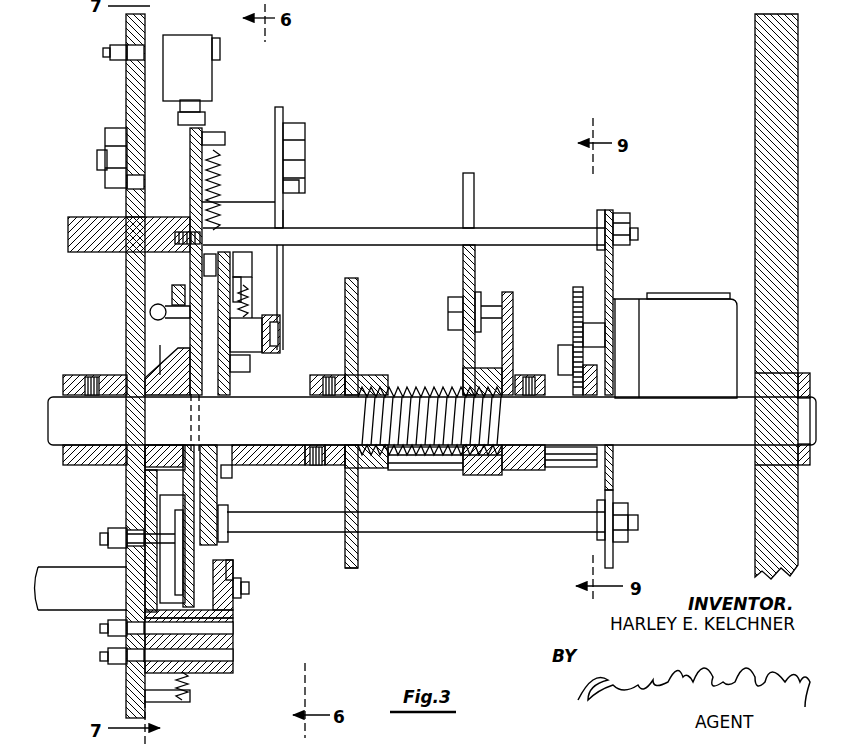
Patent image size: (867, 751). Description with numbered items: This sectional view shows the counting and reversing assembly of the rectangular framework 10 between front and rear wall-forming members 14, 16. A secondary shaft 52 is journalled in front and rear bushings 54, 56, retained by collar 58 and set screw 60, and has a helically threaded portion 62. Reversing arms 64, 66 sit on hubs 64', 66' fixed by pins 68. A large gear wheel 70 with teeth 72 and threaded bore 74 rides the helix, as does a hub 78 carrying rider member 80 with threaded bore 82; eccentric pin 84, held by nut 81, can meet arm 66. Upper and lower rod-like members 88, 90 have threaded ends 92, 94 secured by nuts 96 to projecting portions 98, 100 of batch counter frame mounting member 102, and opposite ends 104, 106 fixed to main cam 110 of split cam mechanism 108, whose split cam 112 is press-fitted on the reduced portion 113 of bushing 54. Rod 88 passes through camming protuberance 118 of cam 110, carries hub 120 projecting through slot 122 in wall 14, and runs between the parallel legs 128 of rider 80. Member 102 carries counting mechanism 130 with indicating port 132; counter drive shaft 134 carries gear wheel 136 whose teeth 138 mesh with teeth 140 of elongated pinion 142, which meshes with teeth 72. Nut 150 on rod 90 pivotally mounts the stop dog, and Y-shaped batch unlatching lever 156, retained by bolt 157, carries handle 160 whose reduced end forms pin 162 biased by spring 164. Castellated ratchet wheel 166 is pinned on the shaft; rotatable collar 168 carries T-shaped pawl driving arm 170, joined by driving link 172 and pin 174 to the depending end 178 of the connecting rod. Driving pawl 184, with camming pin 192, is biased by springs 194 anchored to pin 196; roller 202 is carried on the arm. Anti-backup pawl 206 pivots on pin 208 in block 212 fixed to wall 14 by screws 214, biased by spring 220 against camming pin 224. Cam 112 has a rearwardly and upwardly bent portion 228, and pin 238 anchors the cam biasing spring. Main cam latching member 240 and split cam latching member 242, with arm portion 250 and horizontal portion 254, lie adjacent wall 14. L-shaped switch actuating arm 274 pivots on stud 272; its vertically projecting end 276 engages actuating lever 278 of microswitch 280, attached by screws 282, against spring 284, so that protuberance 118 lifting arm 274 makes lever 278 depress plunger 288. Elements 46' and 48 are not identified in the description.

The apparatus 10 is at (368, 200).
The left frame wall 14 is at (126, 684).
The right frame wall 16 is at (760, 74).
The mounting plate 46' is at (291, 150).
The bolt 48 is at (306, 160).
The main shaft 52 is at (684, 447).
The bearing block 54 is at (145, 478).
The bearing flange 56 is at (760, 452).
The bearing nut 58 is at (64, 382).
The set screw 60 is at (90, 376).
The worm 62 is at (418, 394).
The nut 64 is at (304, 477).
The washer 64' is at (328, 477).
The support plate 66 is at (524, 343).
The spacer 66' is at (523, 477).
The lock nut 68 is at (330, 376).
The support arm 70 is at (360, 546).
The arm end 72 is at (356, 574).
The bushing 74 is at (368, 470).
The bearing sleeve 78 is at (480, 475).
The bracket 80 is at (462, 274).
The bolt 81 is at (448, 308).
The collar 82 is at (462, 470).
The bolt plate 84 is at (488, 310).
The upper tie rod 88 is at (522, 228).
The lower tie rod 90 is at (562, 532).
The bolt end 92 is at (638, 234).
The bolt end 94 is at (638, 523).
The nut 96 is at (626, 226).
The end plate 98 is at (609, 212).
The lower plate 100 is at (613, 556).
The plate edge 102 is at (614, 298).
The vertical rod 104 is at (189, 264).
The pin 106 is at (174, 524).
The housing wall 108 is at (188, 272).
The lower housing 110 is at (200, 468).
The bearing 112 is at (180, 382).
The pin 113 is at (205, 396).
The stud 118 is at (208, 214).
The base plate 120 is at (84, 226).
The wall joint 122 is at (118, 218).
The stud 128 is at (468, 178).
The motor housing 130 is at (708, 366).
The housing cap 132 is at (714, 293).
The coupling 134 is at (594, 338).
The coupling nut 136 is at (590, 380).
The gear 138 is at (578, 287).
The sleeve 140 is at (578, 468).
The threaded sleeve 142 is at (425, 468).
The bolt 150 is at (170, 530).
The block 156 is at (150, 495).
The washer 157 is at (140, 545).
The shaft 160 is at (81, 588).
The bolt 162 is at (108, 627).
The spring 164 is at (192, 682).
The bracket 166 is at (230, 549).
The housing bottom 168 is at (278, 466).
The bracket 170 is at (226, 478).
The block 172 is at (284, 326).
The bolt 174 is at (281, 340).
The arm 178 is at (282, 205).
The bracket 184 is at (210, 258).
The bracket 192 is at (245, 290).
The spring 194 is at (250, 300).
The clip 196 is at (252, 366).
The block 202 is at (255, 260).
The housing block 206 is at (226, 600).
The screw 208 is at (250, 588).
The clamp block 212 is at (218, 640).
The bolt 214 is at (108, 656).
The screw head 220 is at (243, 576).
The bracket 224 is at (240, 568).
The wedge block 228 is at (180, 355).
The plate 238 is at (160, 342).
The pad 240 is at (172, 300).
The rod 242 is at (254, 310).
The arm end 250 is at (278, 228).
The screw 254 is at (152, 318).
The bolt 272 is at (155, 180).
The rod 274 is at (189, 153).
The cap 276 is at (192, 132).
The block 278 is at (203, 116).
The switch box 280 is at (172, 72).
The bolt 282 is at (108, 52).
The spring 284 is at (222, 170).
The plunger 288 is at (195, 100).